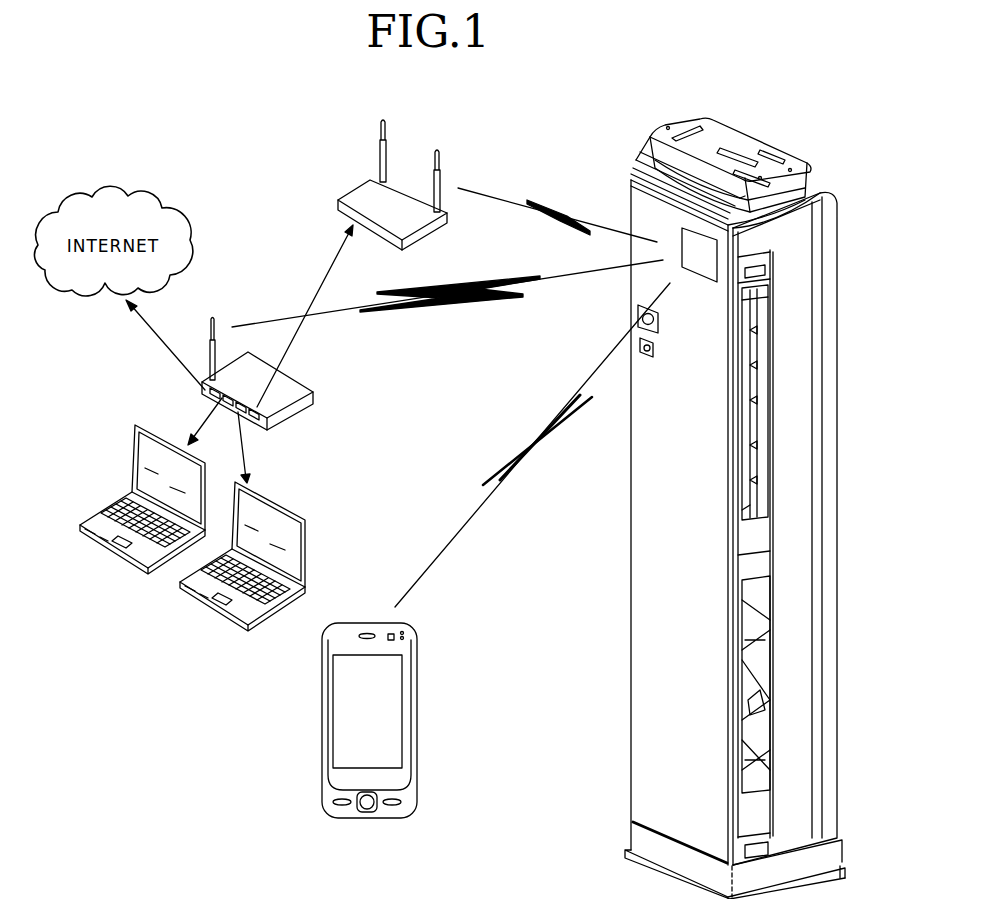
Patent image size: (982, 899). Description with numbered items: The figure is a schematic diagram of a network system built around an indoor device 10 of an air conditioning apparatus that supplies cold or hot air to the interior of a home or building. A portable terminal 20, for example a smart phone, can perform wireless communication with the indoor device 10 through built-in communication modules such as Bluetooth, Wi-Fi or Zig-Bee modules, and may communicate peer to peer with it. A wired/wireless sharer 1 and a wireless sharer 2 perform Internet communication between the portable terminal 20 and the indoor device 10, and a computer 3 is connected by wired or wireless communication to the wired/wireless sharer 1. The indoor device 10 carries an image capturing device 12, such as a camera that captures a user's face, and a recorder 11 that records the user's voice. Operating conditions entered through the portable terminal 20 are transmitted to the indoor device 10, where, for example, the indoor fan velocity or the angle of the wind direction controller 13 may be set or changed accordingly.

The wired/wireless sharer 1 is at (287, 383).
The wireless sharer 2 is at (360, 200).
The computer 3 is at (142, 552).
The indoor device 10 is at (640, 652).
The recorder 11 is at (647, 363).
The image capturing device 12 is at (662, 330).
The wind direction controller 13 is at (757, 337).
The portable terminal 20 is at (392, 726).